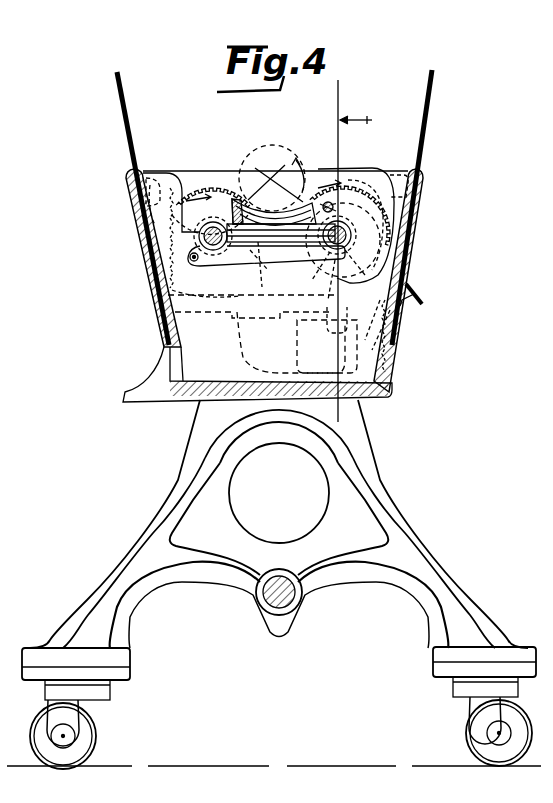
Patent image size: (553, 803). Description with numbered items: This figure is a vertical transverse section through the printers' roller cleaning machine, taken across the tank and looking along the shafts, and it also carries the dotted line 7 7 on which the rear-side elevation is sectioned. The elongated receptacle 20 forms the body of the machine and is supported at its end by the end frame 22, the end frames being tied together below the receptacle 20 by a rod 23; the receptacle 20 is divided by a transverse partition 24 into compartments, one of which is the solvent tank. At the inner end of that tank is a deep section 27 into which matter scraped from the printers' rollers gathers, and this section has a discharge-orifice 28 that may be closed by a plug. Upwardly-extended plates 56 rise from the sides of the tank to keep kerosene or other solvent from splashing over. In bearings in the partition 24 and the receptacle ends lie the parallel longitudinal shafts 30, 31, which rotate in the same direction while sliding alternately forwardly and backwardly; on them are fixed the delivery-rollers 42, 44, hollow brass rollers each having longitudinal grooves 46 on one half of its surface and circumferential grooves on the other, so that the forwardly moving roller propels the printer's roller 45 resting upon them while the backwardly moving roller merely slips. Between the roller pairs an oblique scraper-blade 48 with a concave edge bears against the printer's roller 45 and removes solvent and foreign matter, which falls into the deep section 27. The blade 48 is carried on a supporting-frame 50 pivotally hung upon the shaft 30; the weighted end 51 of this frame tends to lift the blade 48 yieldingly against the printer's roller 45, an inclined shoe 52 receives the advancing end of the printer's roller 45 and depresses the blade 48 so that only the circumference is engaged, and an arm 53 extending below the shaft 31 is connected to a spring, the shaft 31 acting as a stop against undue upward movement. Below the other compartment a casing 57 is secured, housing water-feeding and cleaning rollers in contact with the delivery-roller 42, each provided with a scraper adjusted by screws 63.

The dotted line 7 7 (section line) 7 is at (355, 259).
The elongated receptacle 20 is at (388, 256).
The end frame 22 is at (350, 447).
The rod 23 is at (262, 598).
The transverse partition 24 is at (162, 207).
The deep section 27 is at (168, 342).
The discharge-orifice 28 is at (172, 368).
The longitudinal shaft 30 is at (383, 255).
The longitudinal shaft 31 is at (188, 262).
The delivery-roller 42 is at (368, 200).
The delivery-roller 44 is at (196, 228).
The printer's roller 45 is at (266, 155).
The longitudinal grooves 46 is at (190, 190).
The oblique scraper-blade 48 is at (305, 194).
The supporting-frame 50 is at (266, 252).
The weighted end 51 is at (338, 250).
The inclined shoe 52 is at (243, 197).
The arm 53 is at (172, 288).
The upwardly-extended plates 56 is at (131, 118).
The casing 57 is at (258, 366).
The screws 63 is at (414, 307).